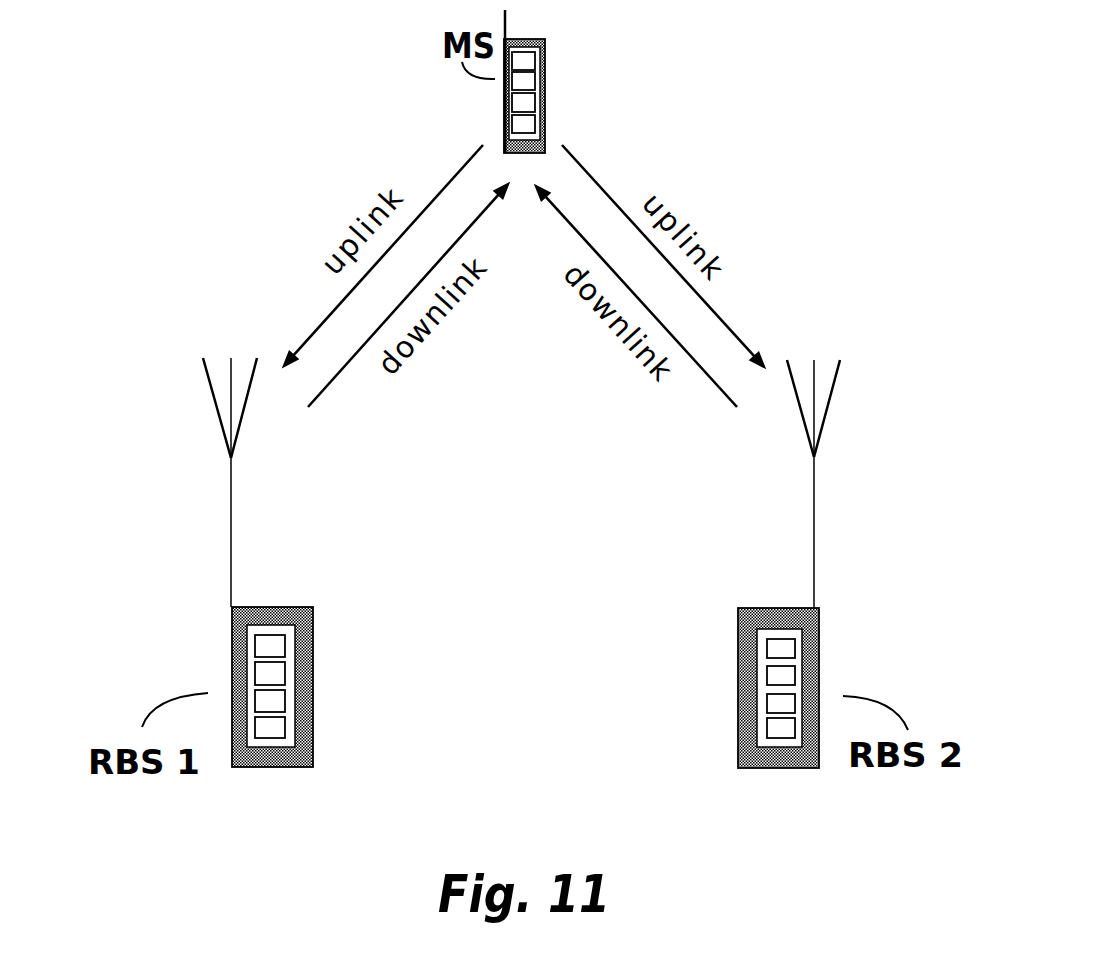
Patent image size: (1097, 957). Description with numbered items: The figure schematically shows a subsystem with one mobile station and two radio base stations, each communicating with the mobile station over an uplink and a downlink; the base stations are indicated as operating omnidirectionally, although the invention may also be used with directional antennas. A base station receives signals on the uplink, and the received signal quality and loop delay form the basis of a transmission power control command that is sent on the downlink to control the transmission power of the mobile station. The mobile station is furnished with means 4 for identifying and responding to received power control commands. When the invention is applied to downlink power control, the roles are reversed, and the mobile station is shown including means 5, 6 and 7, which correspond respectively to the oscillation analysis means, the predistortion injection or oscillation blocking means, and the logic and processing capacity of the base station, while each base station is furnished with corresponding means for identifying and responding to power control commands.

The means for identifying and responding to received power control commands 4 is at (530, 64).
The means corresponding to means 1 5 is at (530, 84).
The means corresponding to means 2 6 is at (530, 105).
The means corresponding to means 3 7 is at (530, 127).